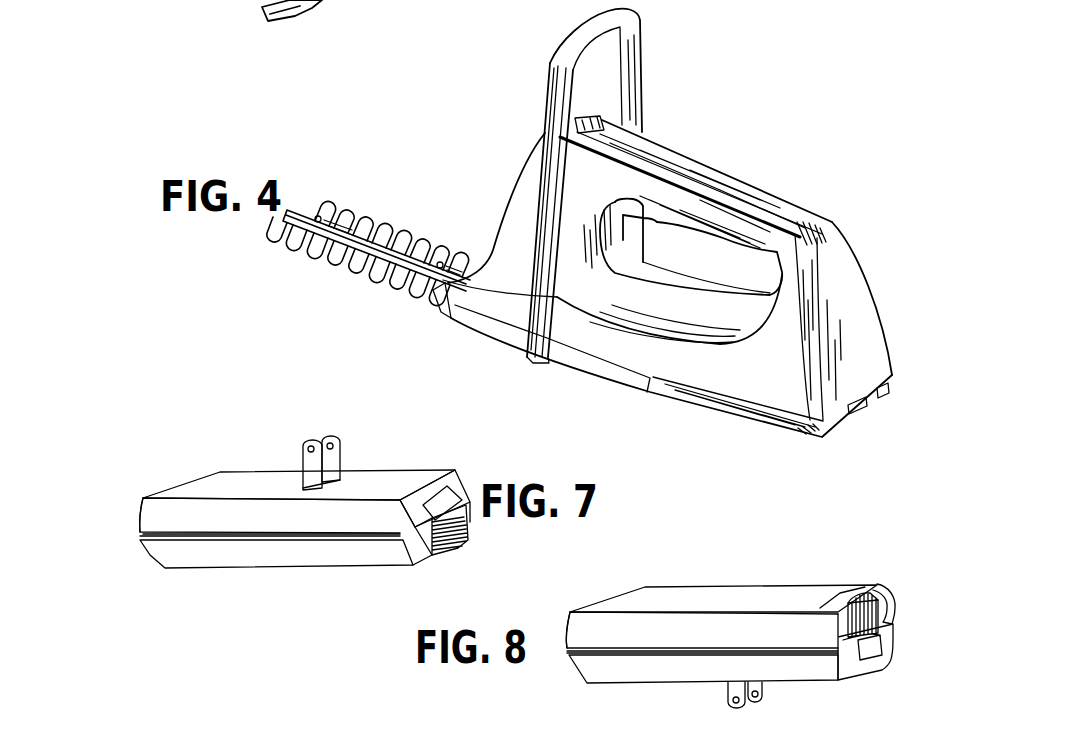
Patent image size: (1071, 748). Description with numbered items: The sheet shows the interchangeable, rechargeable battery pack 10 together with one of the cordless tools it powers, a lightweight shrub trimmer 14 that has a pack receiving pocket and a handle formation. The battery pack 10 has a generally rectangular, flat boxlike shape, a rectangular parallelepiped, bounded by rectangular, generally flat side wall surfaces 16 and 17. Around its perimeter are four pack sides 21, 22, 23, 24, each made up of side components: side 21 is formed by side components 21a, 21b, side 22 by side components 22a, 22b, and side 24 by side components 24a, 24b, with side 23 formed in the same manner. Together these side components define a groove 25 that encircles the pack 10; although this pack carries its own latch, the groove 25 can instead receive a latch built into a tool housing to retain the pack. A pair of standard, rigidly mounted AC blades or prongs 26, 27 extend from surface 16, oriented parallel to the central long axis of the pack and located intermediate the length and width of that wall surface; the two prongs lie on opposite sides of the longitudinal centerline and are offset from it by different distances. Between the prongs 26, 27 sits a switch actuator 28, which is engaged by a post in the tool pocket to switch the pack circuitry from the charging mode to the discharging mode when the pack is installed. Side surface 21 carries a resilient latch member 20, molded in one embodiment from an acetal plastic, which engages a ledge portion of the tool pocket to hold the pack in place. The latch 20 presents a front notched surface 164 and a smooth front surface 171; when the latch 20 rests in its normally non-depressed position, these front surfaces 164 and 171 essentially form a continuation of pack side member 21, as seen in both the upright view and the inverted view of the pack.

In FIG. 4, the battery pack 10 is at (819, 435).
In FIG. 7, the battery pack 10 is at (308, 520).
In FIG. 8, the battery pack 10 is at (705, 621).
In FIG. 4, the shrub trimmer 14 is at (697, 142).
In FIG. 7, the side wall surface 16 is at (230, 477).
In FIG. 8, the side wall surface 17 is at (653, 602).
In FIG. 7, the latch member 20 is at (447, 550).
In FIG. 8, the latch member 20 is at (862, 594).
In FIG. 7, the pack side 21 is at (475, 523).
In FIG. 8, the pack side 21 is at (857, 625).
In FIG. 7, the side component 21a is at (420, 553).
In FIG. 8, the side component 21a is at (885, 595).
In FIG. 7, the side component 21b is at (460, 487).
In FIG. 8, the side component 21b is at (843, 667).
In FIG. 7, the pack side 22 is at (261, 527).
In FIG. 7, the side component 22a is at (253, 562).
In FIG. 7, the side component 22b is at (261, 481).
In FIG. 7, the pack side 23 is at (132, 502).
In FIG. 8, the pack side 23 is at (563, 666).
In FIG. 8, the pack side 24 is at (671, 634).
In FIG. 8, the side component 24a is at (689, 596).
In FIG. 8, the side component 24b is at (657, 673).
In FIG. 7, the groove 25 is at (192, 537).
In FIG. 8, the groove 25 is at (627, 652).
In FIG. 7, the AC prong 26 is at (303, 450).
In FIG. 8, the AC prong 26 is at (762, 697).
In FIG. 7, the AC prong 27 is at (340, 443).
In FIG. 8, the AC prong 27 is at (728, 693).
In FIG. 7, the switch actuator 28 is at (328, 480).
In FIG. 7, the front notched surface 164 is at (468, 532).
In FIG. 8, the front notched surface 164 is at (847, 623).
In FIG. 7, the smooth front surface 171 is at (445, 498).
In FIG. 8, the smooth front surface 171 is at (872, 653).